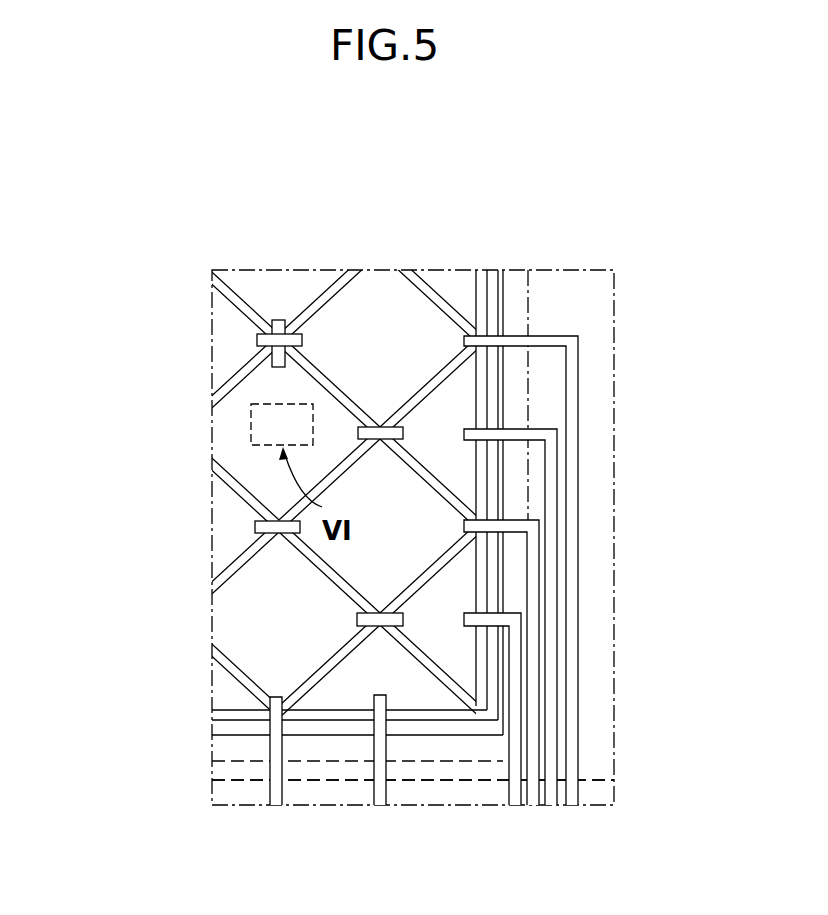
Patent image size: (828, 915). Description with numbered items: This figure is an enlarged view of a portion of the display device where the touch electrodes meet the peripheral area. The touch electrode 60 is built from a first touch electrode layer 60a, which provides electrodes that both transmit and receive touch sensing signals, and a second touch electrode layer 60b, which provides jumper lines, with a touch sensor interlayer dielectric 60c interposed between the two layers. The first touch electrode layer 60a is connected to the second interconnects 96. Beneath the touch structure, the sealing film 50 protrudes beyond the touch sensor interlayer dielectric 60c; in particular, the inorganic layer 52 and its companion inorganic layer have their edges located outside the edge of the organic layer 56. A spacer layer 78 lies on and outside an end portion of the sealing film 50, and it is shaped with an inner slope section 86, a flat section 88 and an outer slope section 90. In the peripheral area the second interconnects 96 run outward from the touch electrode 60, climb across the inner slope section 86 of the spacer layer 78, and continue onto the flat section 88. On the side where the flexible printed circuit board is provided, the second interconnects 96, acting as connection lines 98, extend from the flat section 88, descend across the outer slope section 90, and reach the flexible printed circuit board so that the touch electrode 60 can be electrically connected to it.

The sealing film 50 is at (520, 864).
The inorganic layer 52 is at (450, 781).
The organic layer 56 is at (402, 762).
The touch electrode 60 is at (112, 366).
The first touch electrode layer 60a is at (379, 286).
The second touch electrode layer 60b is at (262, 341).
The touch sensor interlayer dielectric 60c is at (323, 716).
The spacer layer 78 is at (500, 480).
The inner slope section 86 is at (512, 558).
The flat section 88 is at (541, 508).
The outer slope section 90 is at (243, 794).
The second interconnect 96 is at (578, 377).
The connection line 98 is at (278, 789).